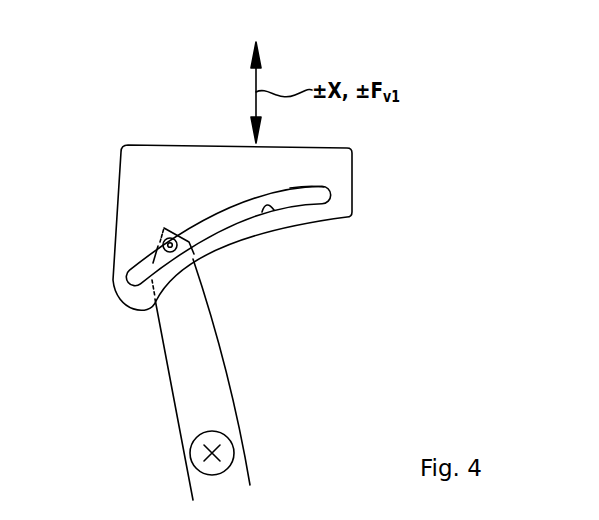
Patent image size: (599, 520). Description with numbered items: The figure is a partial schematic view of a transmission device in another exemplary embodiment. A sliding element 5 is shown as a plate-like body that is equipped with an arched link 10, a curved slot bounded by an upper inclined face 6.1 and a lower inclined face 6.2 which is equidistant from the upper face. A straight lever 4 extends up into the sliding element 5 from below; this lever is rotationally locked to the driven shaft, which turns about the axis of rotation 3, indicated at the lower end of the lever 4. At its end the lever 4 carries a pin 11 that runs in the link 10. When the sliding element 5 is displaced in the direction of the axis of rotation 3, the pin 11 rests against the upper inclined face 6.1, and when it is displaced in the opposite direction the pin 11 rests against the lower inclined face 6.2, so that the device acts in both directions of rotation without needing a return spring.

The axis of rotation 3 is at (224, 435).
The lever 4 is at (212, 348).
The sliding element 5 is at (133, 201).
The upper inclined face 6.1 is at (278, 198).
The lower inclined face 6.2 is at (269, 205).
The arched link 10 is at (228, 210).
The pin 11 is at (162, 235).